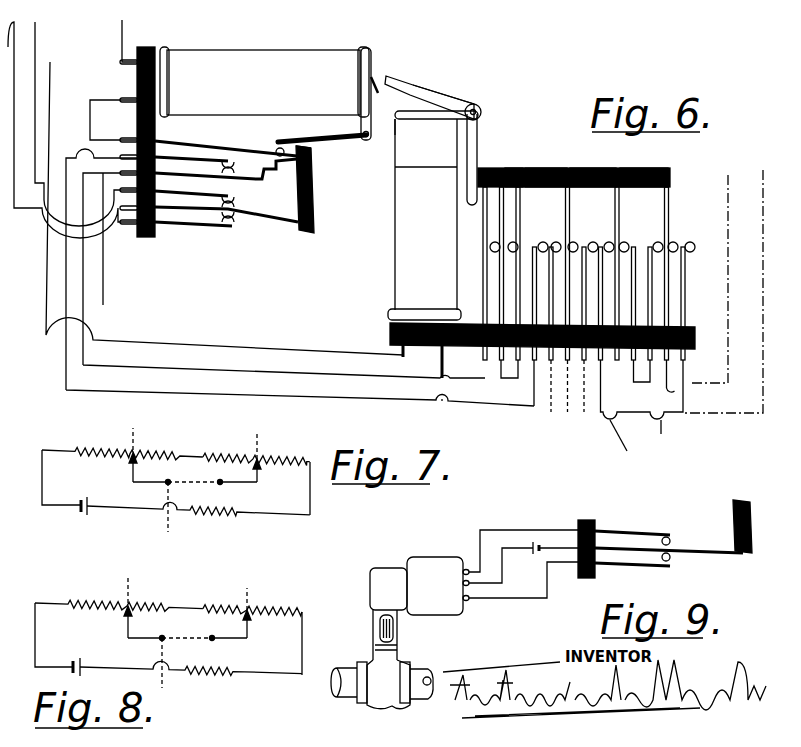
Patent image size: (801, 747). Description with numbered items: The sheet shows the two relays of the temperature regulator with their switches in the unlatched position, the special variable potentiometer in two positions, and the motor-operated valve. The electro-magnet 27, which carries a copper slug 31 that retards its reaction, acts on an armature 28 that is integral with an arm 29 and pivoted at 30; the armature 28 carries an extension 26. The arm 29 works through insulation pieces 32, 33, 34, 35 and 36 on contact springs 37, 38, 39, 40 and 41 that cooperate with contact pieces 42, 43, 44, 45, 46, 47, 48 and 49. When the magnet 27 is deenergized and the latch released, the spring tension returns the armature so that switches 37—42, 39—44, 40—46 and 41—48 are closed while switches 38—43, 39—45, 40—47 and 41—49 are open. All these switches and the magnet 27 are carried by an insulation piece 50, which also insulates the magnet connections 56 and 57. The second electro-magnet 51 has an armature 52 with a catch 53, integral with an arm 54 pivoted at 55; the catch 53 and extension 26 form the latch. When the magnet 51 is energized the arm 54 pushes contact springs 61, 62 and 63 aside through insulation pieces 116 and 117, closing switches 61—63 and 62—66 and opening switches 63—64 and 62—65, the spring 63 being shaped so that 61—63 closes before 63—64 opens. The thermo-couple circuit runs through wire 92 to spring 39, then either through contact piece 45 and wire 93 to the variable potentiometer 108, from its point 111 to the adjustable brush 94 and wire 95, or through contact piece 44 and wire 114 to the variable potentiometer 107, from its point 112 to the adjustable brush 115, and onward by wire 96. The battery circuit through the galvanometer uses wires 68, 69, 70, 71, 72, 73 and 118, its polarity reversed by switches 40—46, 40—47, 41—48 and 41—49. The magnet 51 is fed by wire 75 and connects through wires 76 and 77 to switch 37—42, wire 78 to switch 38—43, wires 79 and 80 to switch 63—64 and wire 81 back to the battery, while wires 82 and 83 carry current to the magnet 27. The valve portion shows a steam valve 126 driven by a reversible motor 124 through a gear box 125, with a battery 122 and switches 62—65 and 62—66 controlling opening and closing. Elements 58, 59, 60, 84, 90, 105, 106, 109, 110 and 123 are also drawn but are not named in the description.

In FIG. 6, the extension 26 is at (402, 82).
In FIG. 6, the electro-magnet 27 is at (395, 262).
In FIG. 6, the armature 28 is at (438, 93).
In FIG. 6, the arm 29 is at (478, 139).
In FIG. 6, the pivot 30 is at (482, 106).
In FIG. 6, the copper slug 31 is at (394, 165).
In FIG. 6, the insulation piece 32 is at (491, 168).
In FIG. 6, the insulation piece 33 is at (514, 168).
In FIG. 6, the insulation piece 34 is at (546, 168).
In FIG. 6, the insulation piece 35 is at (586, 169).
In FIG. 6, the insulation piece 36 is at (636, 169).
In FIG. 6, the contact spring 37 is at (500, 211).
In FIG. 6, the contact spring 38 is at (521, 209).
In FIG. 6, the contact spring 39 is at (577, 200).
In FIG. 6, the contact spring 40 is at (625, 203).
In FIG. 6, the contact spring 41 is at (669, 213).
In FIG. 6, the contact piece 42 is at (483, 290).
In FIG. 6, the contact piece 43 is at (538, 240).
In FIG. 6, the contact piece 44 is at (556, 242).
In FIG. 6, the contact piece 45 is at (593, 241).
In FIG. 6, the contact piece 46 is at (609, 241).
In FIG. 6, the contact piece 47 is at (637, 242).
In FIG. 6, the contact piece 48 is at (671, 241).
In FIG. 6, the contact piece 49 is at (683, 291).
In FIG. 6, the insulation piece 50 is at (390, 330).
In FIG. 6, the second electro-magnet 51 is at (247, 51).
In FIG. 6, the armature 52 is at (372, 69).
In FIG. 6, the catch 53 is at (379, 91).
In FIG. 6, the arm 54 is at (288, 139).
In FIG. 6, the pivot 55 is at (410, 150).
In FIG. 6, the magnet connection 56 is at (406, 350).
In FIG. 6, the magnet connection 57 is at (446, 352).
In FIG. 6, the terminal 58 is at (133, 67).
In FIG. 6, the terminal 59 is at (132, 104).
In FIG. 6, the terminal block 60 is at (158, 141).
In FIG. 9, the terminal block 60 is at (590, 521).
In FIG. 6, the contact spring 61 is at (240, 151).
In FIG. 6, the contact spring 62 is at (255, 224).
In FIG. 9, the contact spring 62 is at (690, 552).
In FIG. 6, the contact spring 63 is at (262, 181).
In FIG. 6, the contact piece 64 is at (233, 163).
In FIG. 6, the contact piece 65 is at (233, 198).
In FIG. 9, the contact piece 65 is at (651, 533).
In FIG. 6, the contact piece 66 is at (210, 229).
In FIG. 9, the contact piece 66 is at (641, 566).
In FIG. 6, the wire 68 is at (668, 432).
In FIG. 6, the wire 69 is at (629, 443).
In FIG. 6, the wire 70 is at (644, 382).
In FIG. 6, the wire 71 is at (640, 414).
In FIG. 6, the wire 72 is at (762, 345).
In FIG. 6, the wire 73 is at (728, 314).
In FIG. 6, the wire 75 is at (123, 31).
In FIG. 6, the wire 76 is at (97, 100).
In FIG. 6, the wire 77 is at (308, 370).
In FIG. 6, the wire 78 is at (505, 380).
In FIG. 6, the wire 79 is at (507, 407).
In FIG. 6, the wire 80 is at (74, 156).
In FIG. 6, the wire 81 is at (106, 262).
In FIG. 6, the wire 82 is at (55, 116).
In FIG. 6, the wire 83 is at (438, 400).
In FIG. 6, the conductor 84 is at (70, 119).
In FIG. 9, the conductor 84 is at (551, 546).
In FIG. 6, the conductor 90 is at (37, 48).
In FIG. 9, the conductor 90 is at (524, 530).
In FIG. 6, the wire 92 is at (569, 428).
In FIG. 6, the wire 93 is at (585, 420).
In FIG. 7, the wire 93 is at (274, 432).
In FIG. 8, the wire 93 is at (251, 587).
In FIG. 7, the adjustable brush 94 is at (261, 486).
In FIG. 8, the adjustable brush 94 is at (250, 638).
In FIG. 7, the wire 95 is at (198, 484).
In FIG. 8, the wire 95 is at (183, 640).
In FIG. 7, the wire 96 is at (166, 526).
In FIG. 8, the wire 96 is at (165, 688).
In FIG. 7, the battery 105 is at (76, 512).
In FIG. 8, the battery 105 is at (68, 670).
In FIG. 7, the conductor 106 is at (44, 492).
In FIG. 8, the conductor 106 is at (37, 652).
In FIG. 7, the variable potentiometer 107 is at (112, 446).
In FIG. 8, the variable potentiometer 107 is at (102, 600).
In FIG. 7, the variable potentiometer 108 is at (236, 455).
In FIG. 8, the variable potentiometer 108 is at (228, 598).
In FIG. 7, the conductor 109 is at (311, 500).
In FIG. 8, the conductor 109 is at (304, 655).
In FIG. 7, the resistor 110 is at (205, 516).
In FIG. 8, the resistor 110 is at (222, 676).
In FIG. 7, the point 111 is at (263, 460).
In FIG. 8, the point 111 is at (254, 612).
In FIG. 7, the point 112 is at (140, 452).
In FIG. 8, the point 112 is at (135, 607).
In FIG. 6, the wire 114 is at (540, 428).
In FIG. 7, the wire 114 is at (151, 428).
In FIG. 8, the wire 114 is at (132, 582).
In FIG. 7, the adjustable brush 115 is at (130, 474).
In FIG. 8, the adjustable brush 115 is at (126, 626).
In FIG. 6, the insulation piece 116 is at (313, 151).
In FIG. 6, the insulation piece 117 is at (313, 202).
In FIG. 9, the insulation piece 117 is at (750, 545).
In FIG. 6, the wire 118 is at (681, 396).
In FIG. 9, the battery 122 is at (538, 557).
In FIG. 9, the conductor 123 is at (535, 603).
In FIG. 9, the reversible motor 124 is at (435, 566).
In FIG. 9, the gear box 125 is at (370, 585).
In FIG. 9, the steam valve 126 is at (384, 705).